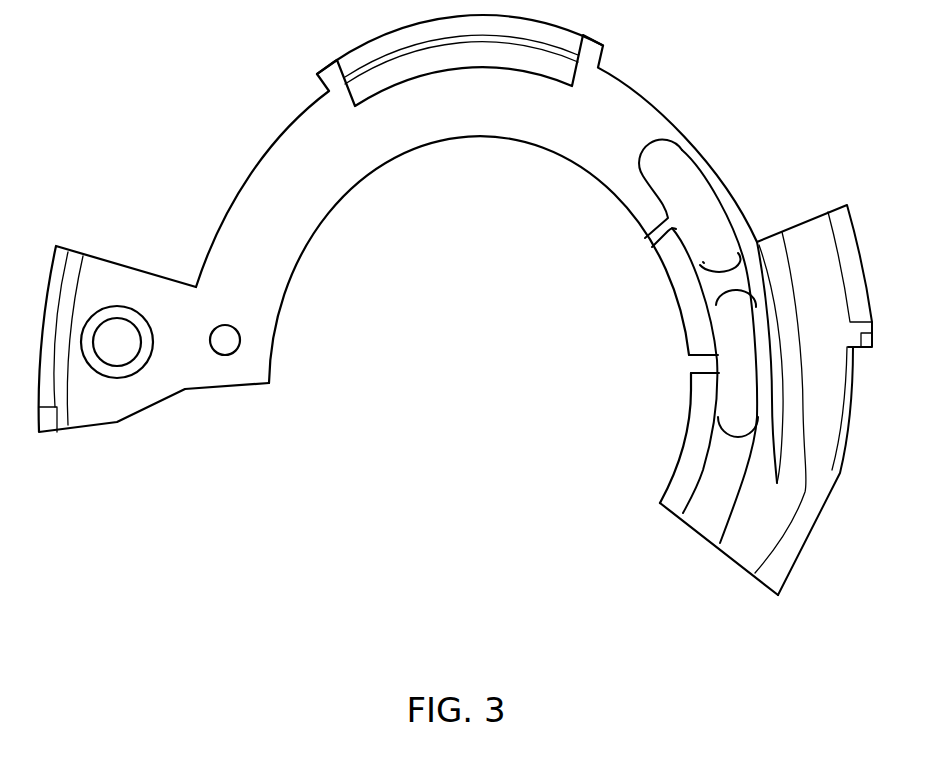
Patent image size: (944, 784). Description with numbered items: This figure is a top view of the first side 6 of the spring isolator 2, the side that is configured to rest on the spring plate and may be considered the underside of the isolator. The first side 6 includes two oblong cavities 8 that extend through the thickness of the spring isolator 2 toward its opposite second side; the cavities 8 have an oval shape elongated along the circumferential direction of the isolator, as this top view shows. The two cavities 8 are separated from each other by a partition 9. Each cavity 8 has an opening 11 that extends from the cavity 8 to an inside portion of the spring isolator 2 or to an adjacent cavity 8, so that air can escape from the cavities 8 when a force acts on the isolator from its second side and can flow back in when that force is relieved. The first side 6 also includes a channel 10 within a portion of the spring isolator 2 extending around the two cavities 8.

The spring isolator 2 is at (138, 146).
The first side 6 is at (277, 240).
The oblong cavities 8 is at (680, 172).
The partition 9 is at (722, 282).
The channel 10 is at (718, 512).
The opening 11 is at (660, 230).